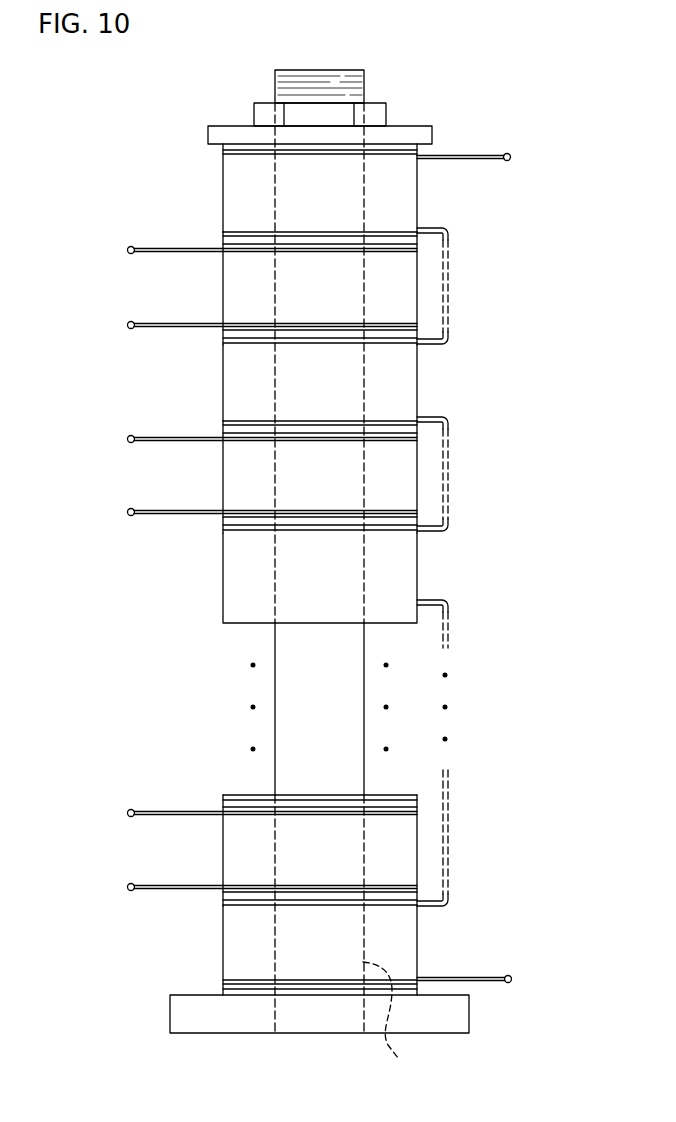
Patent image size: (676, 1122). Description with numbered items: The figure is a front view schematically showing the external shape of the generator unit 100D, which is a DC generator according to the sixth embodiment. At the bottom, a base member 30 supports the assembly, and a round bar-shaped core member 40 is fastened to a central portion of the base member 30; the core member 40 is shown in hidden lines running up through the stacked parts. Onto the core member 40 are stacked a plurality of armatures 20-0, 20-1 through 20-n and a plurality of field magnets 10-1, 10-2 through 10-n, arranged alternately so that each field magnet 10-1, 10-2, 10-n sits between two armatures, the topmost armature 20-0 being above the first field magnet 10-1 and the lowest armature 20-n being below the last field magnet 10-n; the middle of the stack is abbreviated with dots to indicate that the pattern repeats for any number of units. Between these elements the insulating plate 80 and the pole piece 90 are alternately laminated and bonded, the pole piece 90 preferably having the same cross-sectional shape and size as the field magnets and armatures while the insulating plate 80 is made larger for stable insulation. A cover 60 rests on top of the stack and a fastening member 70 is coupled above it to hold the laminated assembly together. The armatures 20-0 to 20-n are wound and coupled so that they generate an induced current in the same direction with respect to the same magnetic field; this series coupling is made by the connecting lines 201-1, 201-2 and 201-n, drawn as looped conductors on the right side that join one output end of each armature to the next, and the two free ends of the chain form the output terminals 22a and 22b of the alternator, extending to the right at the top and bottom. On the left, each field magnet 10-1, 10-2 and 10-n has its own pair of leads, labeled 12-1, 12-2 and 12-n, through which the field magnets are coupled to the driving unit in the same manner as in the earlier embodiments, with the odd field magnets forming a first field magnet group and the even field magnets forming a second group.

The generator unit 100D is at (108, 132).
The fastening member 70 is at (377, 108).
The cover 60 is at (422, 132).
The insulating plate 80 is at (235, 145).
The pole piece 90 is at (230, 156).
The output terminal 22a is at (511, 157).
The output terminal 22b is at (512, 979).
The armature 20-0 is at (422, 190).
The armature 20-1 is at (418, 378).
The armature 20-n is at (420, 947).
The field magnet 10-1 is at (418, 298).
The field magnet 10-2 is at (418, 485).
The field magnet 10-n is at (418, 870).
The connecting line 201-1 is at (446, 262).
The connecting line 201-2 is at (446, 446).
The connecting line 201-n is at (446, 828).
The terminal pair 12-1 is at (128, 252).
The terminal pair 12-2 is at (128, 441).
The terminal pair 12-n is at (128, 815).
The base member 30 is at (459, 1018).
The core member 40 is at (389, 1020).